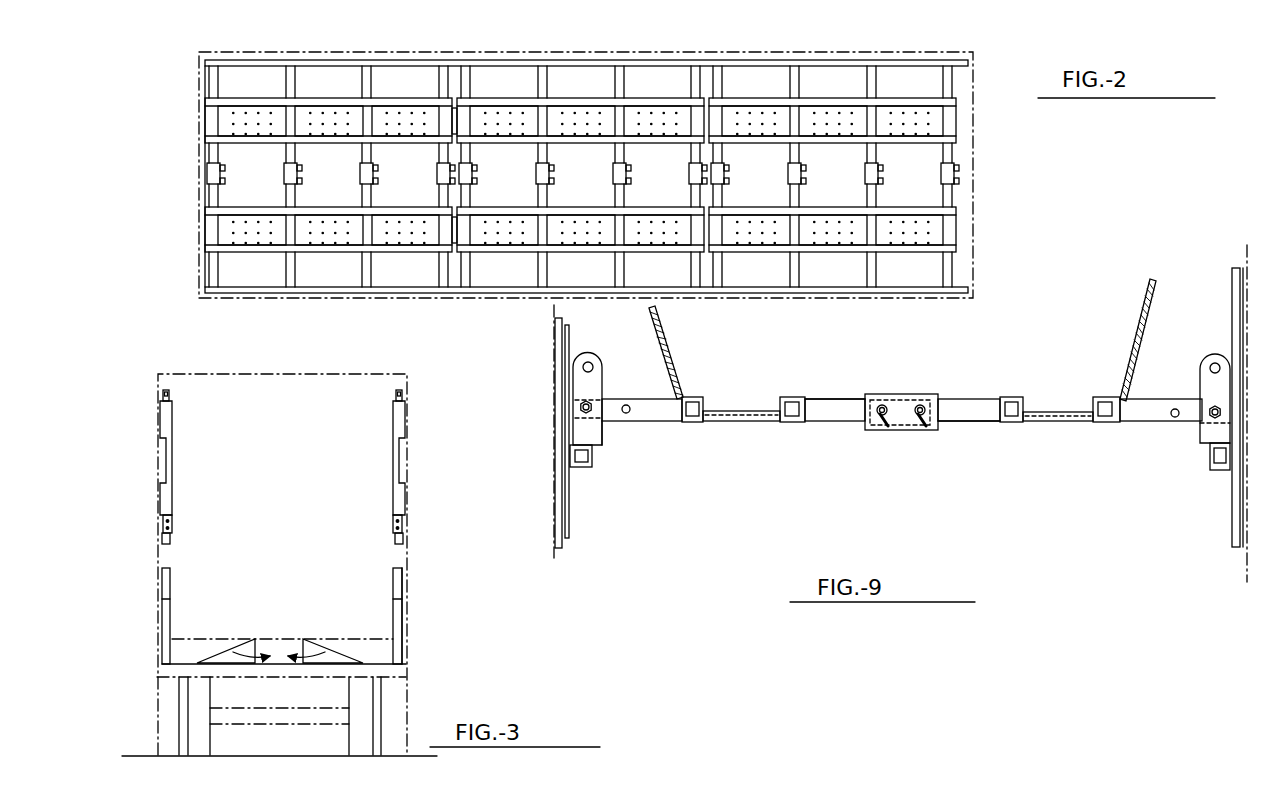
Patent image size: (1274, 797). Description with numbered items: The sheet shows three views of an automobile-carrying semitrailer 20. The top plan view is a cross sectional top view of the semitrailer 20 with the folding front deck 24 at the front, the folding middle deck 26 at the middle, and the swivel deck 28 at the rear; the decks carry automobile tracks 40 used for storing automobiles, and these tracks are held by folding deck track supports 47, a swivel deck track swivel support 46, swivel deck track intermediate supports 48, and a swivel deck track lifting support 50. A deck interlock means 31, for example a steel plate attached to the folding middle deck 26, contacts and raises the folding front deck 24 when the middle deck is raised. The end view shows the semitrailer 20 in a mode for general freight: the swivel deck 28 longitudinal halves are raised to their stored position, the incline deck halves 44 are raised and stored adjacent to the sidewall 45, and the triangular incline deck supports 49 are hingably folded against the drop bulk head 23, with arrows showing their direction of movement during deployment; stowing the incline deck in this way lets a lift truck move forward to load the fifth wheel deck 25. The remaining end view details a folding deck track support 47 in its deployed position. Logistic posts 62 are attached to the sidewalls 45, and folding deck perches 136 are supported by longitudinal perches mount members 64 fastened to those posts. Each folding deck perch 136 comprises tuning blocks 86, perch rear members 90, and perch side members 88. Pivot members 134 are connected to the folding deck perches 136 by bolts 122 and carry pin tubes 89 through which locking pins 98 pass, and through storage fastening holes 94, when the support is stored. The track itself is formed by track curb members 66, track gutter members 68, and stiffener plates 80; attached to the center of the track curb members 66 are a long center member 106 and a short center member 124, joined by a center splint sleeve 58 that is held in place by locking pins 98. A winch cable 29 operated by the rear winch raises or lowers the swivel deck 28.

In FIG. 2, the semitrailer 20 is at (201, 70).
In FIG. 3, the semitrailer 20 is at (157, 379).
In FIG. 2, the folding front deck 24 is at (295, 145).
In FIG. 2, the folding middle deck 26 is at (583, 60).
In FIG. 2, the swivel deck 28 is at (873, 145).
In FIG. 3, the swivel deck 28 is at (400, 410).
In FIG. 2, the deck interlock means 31 is at (455, 118).
In FIG. 2, the automobile tracks 40 is at (211, 116).
In FIG. 2, the folding deck track support 47 is at (206, 163).
In FIG. 9, the folding deck track support 47 is at (839, 396).
In FIG. 2, the swivel deck track swivel support 46 is at (722, 155).
In FIG. 2, the swivel deck track intermediate supports 48 is at (864, 165).
In FIG. 2, the swivel deck track lifting support 50 is at (957, 162).
In FIG. 3, the incline deck halves 44 is at (172, 575).
In FIG. 3, the sidewall 45 is at (405, 597).
In FIG. 9, the sidewall 45 is at (555, 378).
In FIG. 3, the drop bulk head 23 is at (215, 640).
In FIG. 3, the fifth wheel deck 25 is at (370, 640).
In FIG. 3, the triangular incline deck supports 49 is at (255, 652).
In FIG. 9, the logistic posts 62 is at (569, 333).
In FIG. 9, the perch side members 88 is at (589, 356).
In FIG. 9, the storage fastening holes 94 is at (595, 366).
In FIG. 9, the perch rear members 90 is at (574, 432).
In FIG. 9, the pin tubes 89 is at (626, 414).
In FIG. 9, the track curb members 66 is at (690, 424).
In FIG. 9, the track gutter members 68 is at (694, 397).
In FIG. 9, the stiffener plates 80 is at (750, 422).
In FIG. 9, the longitudinal perches mount members 64 is at (585, 468).
In FIG. 9, the folding deck perches 136 is at (604, 448).
In FIG. 9, the winch cable 29 is at (666, 335).
In FIG. 9, the center splint sleeve 58 is at (912, 394).
In FIG. 9, the locking pins 98 is at (884, 418).
In FIG. 9, the long center member 106 is at (970, 431).
In FIG. 9, the short center member 124 is at (832, 422).
In FIG. 9, the pivot members 134 is at (1128, 423).
In FIG. 9, the bolts 122 is at (1212, 406).
In FIG. 9, the tuning blocks 86 is at (1200, 448).